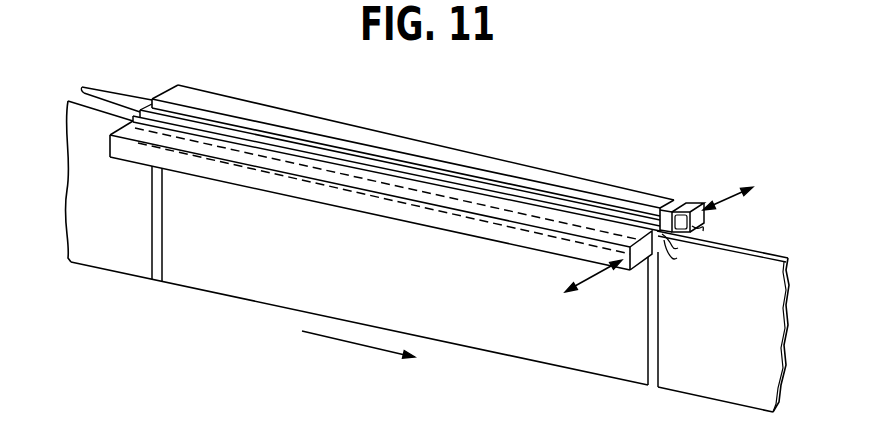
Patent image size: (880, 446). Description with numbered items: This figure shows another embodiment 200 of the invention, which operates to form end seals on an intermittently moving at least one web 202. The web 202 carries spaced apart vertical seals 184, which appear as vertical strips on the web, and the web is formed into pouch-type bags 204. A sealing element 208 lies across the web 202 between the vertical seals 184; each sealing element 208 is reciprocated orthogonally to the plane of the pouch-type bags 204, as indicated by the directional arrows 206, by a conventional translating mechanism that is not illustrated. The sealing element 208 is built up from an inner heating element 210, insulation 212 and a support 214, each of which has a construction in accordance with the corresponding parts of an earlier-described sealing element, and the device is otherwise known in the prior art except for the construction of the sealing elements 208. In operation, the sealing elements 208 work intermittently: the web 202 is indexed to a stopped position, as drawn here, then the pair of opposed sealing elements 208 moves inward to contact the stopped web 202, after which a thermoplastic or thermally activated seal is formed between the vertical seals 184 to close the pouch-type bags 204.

The vertical seals 184 is at (156, 262).
The embodiment 200 is at (543, 78).
The web 202 is at (103, 247).
The pouch-type bags 204 is at (490, 332).
The directional arrows 206 is at (728, 197).
The sealing element 208 is at (254, 80).
The inner heating element 210 is at (658, 212).
The insulation 212 is at (507, 177).
The support 214 is at (370, 132).